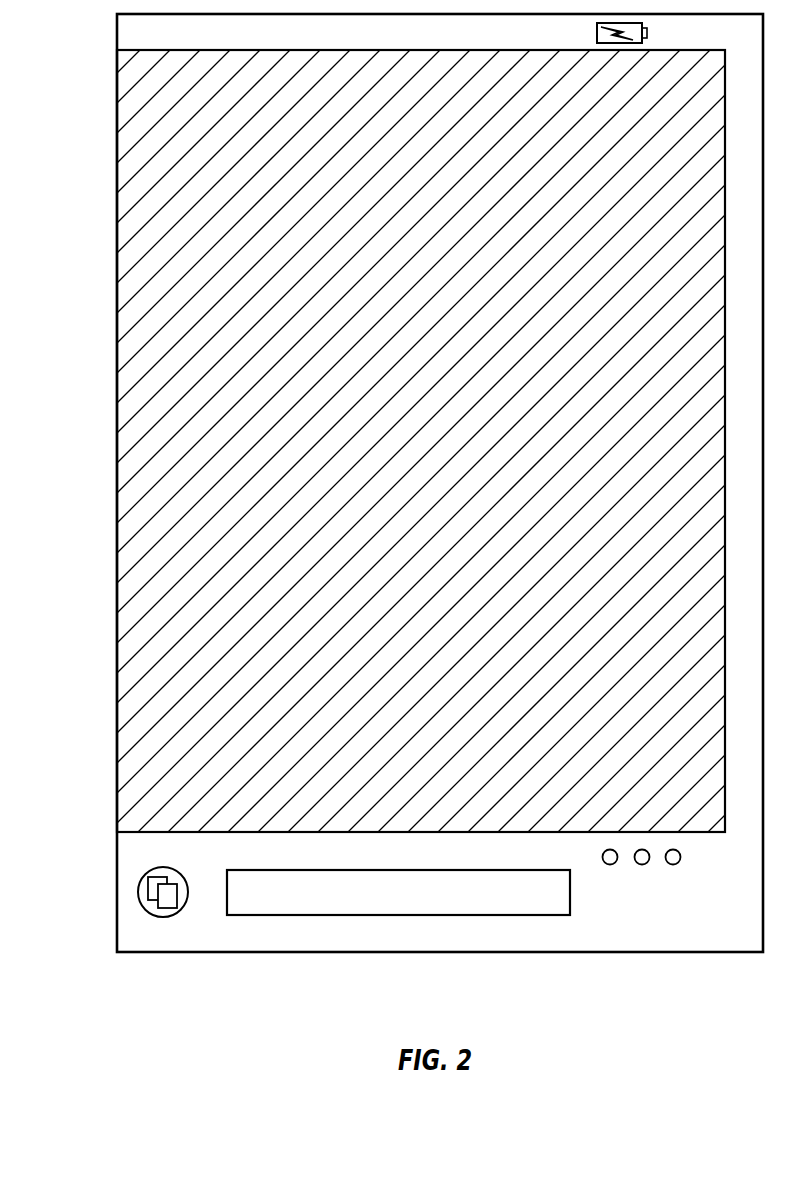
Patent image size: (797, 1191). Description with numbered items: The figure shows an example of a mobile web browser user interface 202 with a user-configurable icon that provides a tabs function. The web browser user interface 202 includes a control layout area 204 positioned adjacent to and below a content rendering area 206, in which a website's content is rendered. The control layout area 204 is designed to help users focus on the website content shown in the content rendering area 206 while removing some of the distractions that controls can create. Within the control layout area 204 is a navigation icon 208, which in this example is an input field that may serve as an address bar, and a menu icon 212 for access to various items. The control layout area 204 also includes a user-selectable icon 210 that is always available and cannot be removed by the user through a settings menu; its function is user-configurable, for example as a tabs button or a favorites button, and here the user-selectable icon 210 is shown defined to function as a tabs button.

The mobile web browser user interface 202 is at (116, 443).
The control layout area 204 is at (130, 845).
The content rendering area 206 is at (443, 453).
The navigation icon 208 is at (300, 897).
The user-selectable icon 210 is at (137, 890).
The menu icon 212 is at (642, 866).